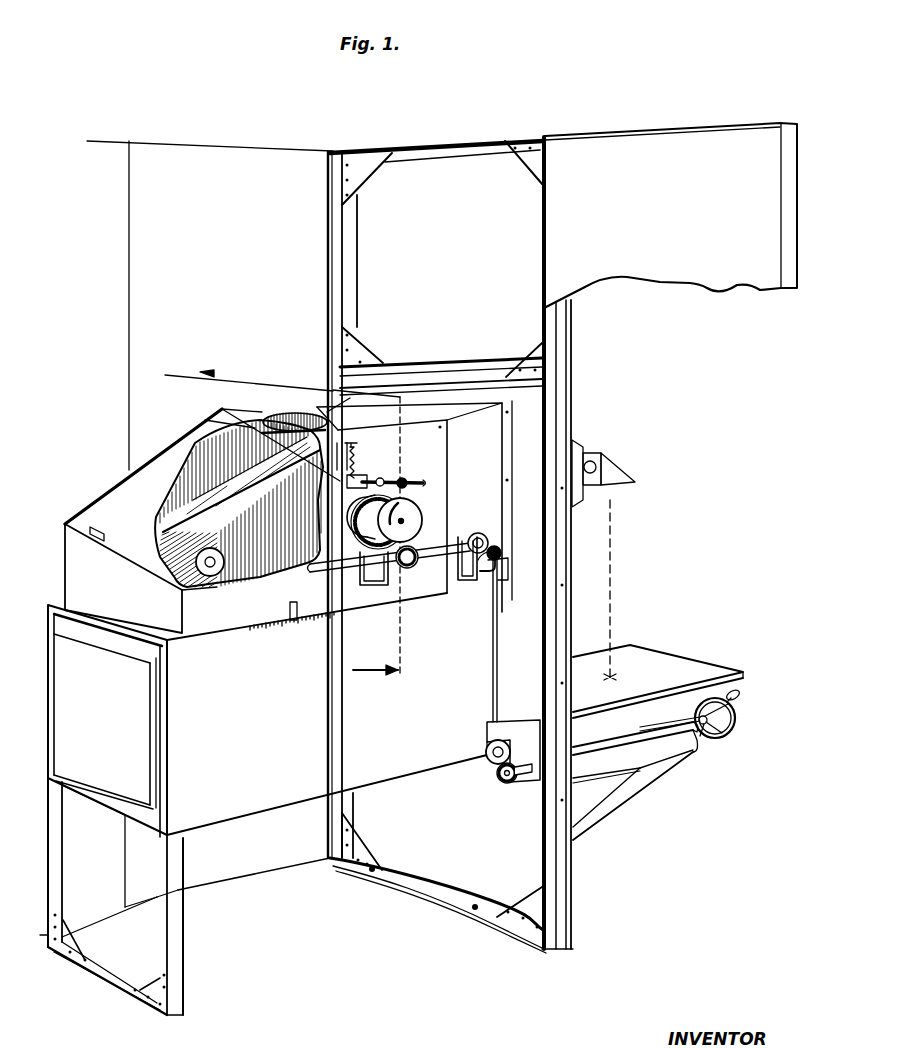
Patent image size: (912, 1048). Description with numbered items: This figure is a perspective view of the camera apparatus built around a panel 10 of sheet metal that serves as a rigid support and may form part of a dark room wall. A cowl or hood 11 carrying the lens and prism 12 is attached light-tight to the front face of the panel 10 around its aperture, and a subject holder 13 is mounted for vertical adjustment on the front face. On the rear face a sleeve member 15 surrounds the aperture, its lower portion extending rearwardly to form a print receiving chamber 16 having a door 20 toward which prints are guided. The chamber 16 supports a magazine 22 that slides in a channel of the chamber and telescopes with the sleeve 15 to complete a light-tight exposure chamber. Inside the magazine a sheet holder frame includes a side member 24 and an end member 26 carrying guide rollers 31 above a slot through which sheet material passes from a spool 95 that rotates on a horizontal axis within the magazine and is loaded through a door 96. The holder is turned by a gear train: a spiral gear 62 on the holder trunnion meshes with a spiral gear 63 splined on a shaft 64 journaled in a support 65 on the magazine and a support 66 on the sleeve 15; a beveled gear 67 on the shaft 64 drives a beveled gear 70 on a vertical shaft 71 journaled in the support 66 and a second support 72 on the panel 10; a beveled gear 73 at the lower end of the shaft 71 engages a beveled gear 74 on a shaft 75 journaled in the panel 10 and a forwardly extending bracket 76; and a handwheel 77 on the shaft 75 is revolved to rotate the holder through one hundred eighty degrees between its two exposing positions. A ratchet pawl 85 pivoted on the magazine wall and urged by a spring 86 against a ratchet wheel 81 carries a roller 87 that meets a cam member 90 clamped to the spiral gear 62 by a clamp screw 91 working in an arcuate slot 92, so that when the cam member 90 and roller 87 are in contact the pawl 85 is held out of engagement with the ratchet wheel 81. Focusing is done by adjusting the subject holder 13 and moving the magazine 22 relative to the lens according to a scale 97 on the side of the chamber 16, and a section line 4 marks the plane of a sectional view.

The section line 4- 4 is at (289, 522).
The panel 10 is at (430, 252).
The cowl or hood 11 is at (577, 445).
The lens and prism 12 is at (618, 465).
The subject holder 13 is at (708, 670).
The sleeve member 15 is at (427, 410).
The print receiving chamber 16 is at (263, 793).
The door 20 is at (135, 780).
The magazine 22 is at (253, 413).
The side member 24 is at (267, 523).
The end member 26 is at (215, 428).
The guide rollers 31 is at (306, 412).
The spiral gear 62 is at (415, 515).
The spiral gear 63 is at (432, 530).
The shaft 64 is at (330, 577).
The support 65 is at (377, 570).
The support 66 is at (467, 570).
The beveled gear 67 is at (478, 530).
The beveled gear 70 is at (493, 573).
The vertical shaft 71 is at (496, 660).
The support 72 is at (487, 728).
The beveled gear 73 is at (492, 760).
The beveled gear 74 is at (512, 785).
The shaft 75 is at (653, 732).
The bracket 76 is at (622, 813).
The handwheel 77 is at (733, 730).
The ratchet wheel 81 is at (352, 478).
The ratchet pawl 85 is at (388, 478).
The spring 86 is at (353, 463).
The roller 87 is at (403, 479).
The cam member 90 is at (360, 522).
The clamp screw 91 is at (403, 507).
The arcuate slot 92 is at (353, 487).
The spool 95 is at (215, 575).
The door 96 is at (130, 497).
The scale 97 is at (287, 638).